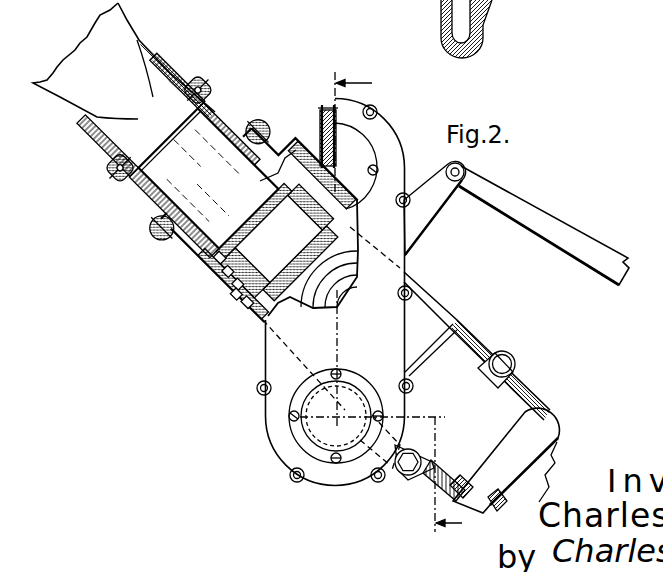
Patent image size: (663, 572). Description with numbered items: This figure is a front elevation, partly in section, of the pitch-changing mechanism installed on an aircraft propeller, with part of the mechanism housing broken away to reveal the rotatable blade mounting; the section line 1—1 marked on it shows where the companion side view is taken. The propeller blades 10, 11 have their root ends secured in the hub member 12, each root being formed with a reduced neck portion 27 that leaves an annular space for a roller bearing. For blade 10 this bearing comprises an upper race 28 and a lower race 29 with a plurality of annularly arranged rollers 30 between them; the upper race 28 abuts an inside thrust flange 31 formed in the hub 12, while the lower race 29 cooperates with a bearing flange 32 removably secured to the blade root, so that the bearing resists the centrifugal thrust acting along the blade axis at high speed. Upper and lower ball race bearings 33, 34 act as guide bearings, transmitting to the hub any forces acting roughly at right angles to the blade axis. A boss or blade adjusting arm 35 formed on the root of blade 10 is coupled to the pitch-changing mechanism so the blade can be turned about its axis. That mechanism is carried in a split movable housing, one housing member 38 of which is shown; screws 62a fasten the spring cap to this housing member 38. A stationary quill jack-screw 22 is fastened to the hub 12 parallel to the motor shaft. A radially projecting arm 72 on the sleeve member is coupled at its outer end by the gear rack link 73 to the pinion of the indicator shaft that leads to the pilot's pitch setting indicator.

The section line 1 is at (387, 302).
The blade 10 is at (128, 43).
The blade 11 is at (552, 466).
The hub member 12 is at (344, 292).
The quill jack-screw 22 is at (325, 108).
The neck portion 27 is at (278, 238).
The upper race 28 is at (228, 272).
The lower race 29 is at (235, 295).
The rollers 30 is at (238, 284).
The inside thrust flange 31 is at (221, 259).
The bearing flange 32 is at (289, 239).
The upper ball race bearing 33 is at (199, 78).
The lower ball race bearing 34 is at (247, 304).
The blade adjusting arm 35 is at (299, 175).
The housing member 38 is at (351, 359).
The screws 62a is at (380, 167).
The radially projecting arm 72 is at (432, 205).
The gear rack link 73 is at (573, 240).